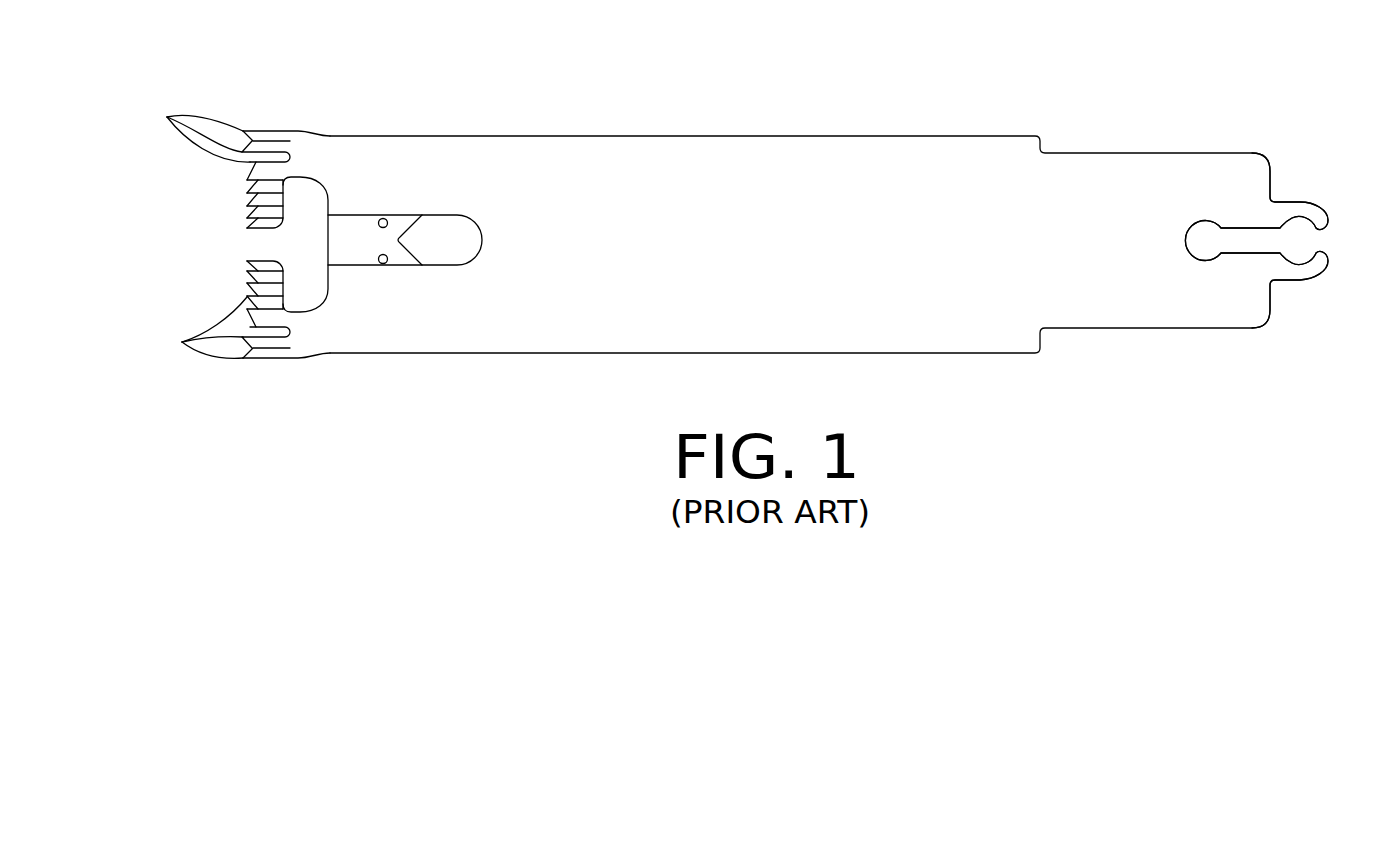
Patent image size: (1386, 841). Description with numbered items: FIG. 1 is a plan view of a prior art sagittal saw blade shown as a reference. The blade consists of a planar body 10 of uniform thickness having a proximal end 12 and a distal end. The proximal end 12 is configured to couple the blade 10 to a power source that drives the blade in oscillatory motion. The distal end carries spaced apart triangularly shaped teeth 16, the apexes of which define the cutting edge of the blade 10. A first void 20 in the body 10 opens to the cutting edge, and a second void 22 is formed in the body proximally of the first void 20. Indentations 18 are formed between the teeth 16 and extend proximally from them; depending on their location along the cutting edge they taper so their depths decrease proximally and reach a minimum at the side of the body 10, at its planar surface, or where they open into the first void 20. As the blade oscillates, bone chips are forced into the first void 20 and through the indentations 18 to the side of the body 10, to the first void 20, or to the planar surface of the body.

The planar body 10 is at (776, 256).
The proximal end 12 is at (1159, 121).
The teeth 16 is at (167, 117).
The indentations 18 is at (282, 148).
The first void 20 is at (267, 243).
The second void 22 is at (448, 228).